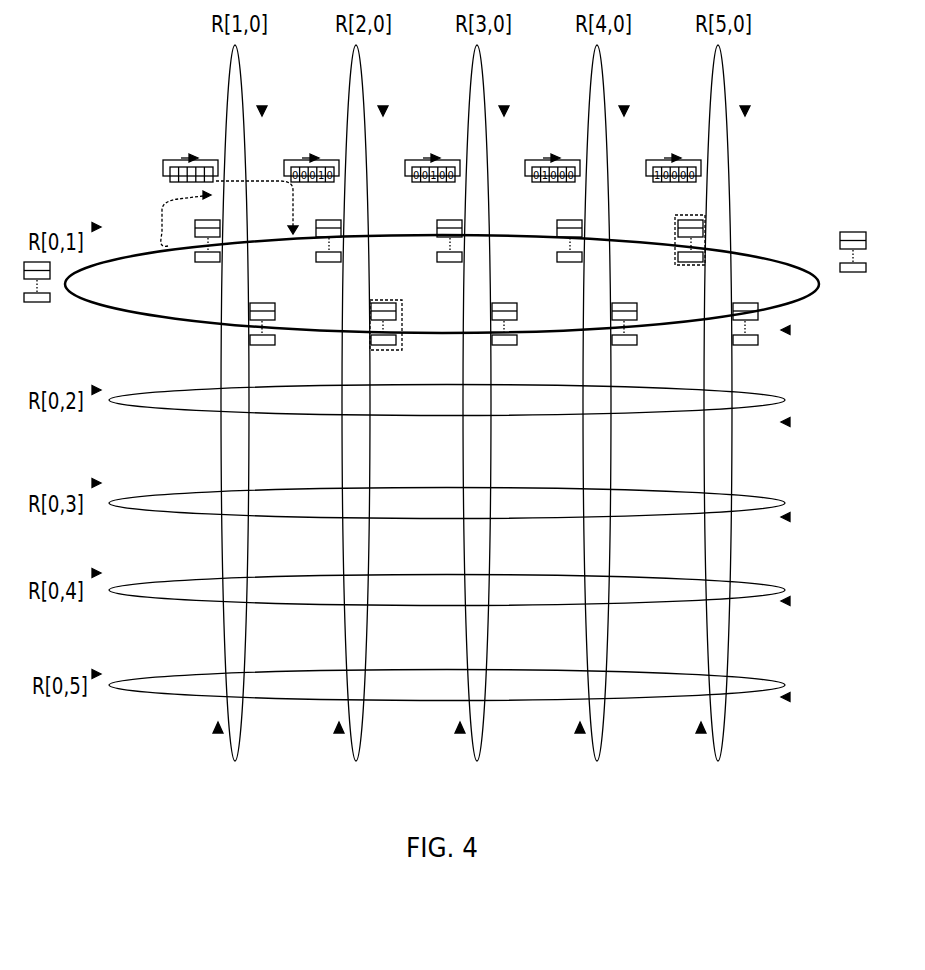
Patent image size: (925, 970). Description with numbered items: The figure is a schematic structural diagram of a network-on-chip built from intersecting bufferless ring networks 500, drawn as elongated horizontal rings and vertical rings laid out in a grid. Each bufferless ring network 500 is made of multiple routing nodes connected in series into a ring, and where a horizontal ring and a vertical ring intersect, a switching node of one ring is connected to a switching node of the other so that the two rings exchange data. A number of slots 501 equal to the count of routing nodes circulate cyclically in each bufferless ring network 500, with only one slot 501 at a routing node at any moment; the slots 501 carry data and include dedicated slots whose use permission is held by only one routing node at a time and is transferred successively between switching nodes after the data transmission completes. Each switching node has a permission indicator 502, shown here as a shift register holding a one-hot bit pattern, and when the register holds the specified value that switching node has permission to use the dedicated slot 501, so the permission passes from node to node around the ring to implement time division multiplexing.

The bufferless ring network 500 is at (732, 193).
The slot 501 is at (381, 299).
The permission indicator 502 is at (165, 178).